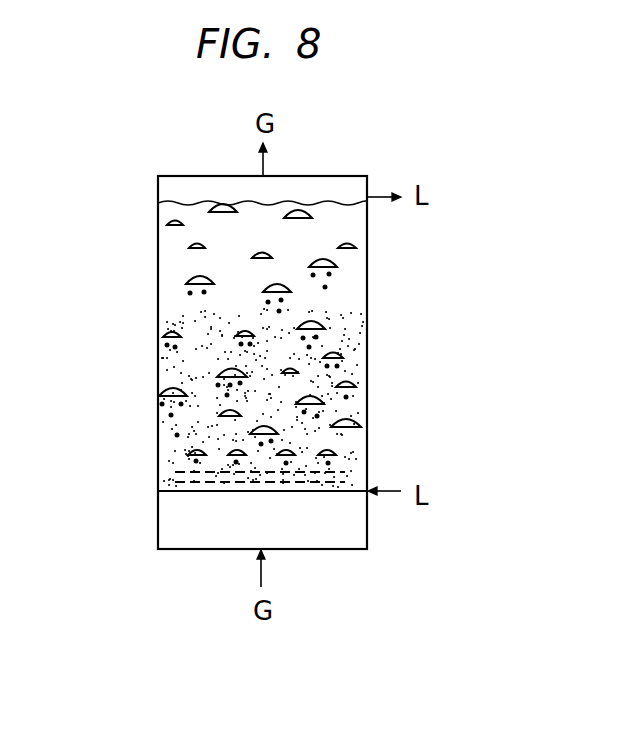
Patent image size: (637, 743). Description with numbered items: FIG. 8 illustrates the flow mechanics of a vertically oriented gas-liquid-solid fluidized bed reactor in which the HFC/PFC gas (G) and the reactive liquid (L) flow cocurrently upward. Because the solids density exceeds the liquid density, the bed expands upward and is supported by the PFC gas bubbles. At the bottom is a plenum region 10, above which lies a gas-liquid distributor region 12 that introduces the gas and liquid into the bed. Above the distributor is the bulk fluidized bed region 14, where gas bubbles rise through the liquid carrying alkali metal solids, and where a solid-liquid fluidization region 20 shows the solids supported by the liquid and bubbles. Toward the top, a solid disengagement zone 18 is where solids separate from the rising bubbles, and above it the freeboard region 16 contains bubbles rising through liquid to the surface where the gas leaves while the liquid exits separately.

The plenum region 10 is at (150, 548).
The gas-liquid distributor region 12 is at (150, 490).
The bulk fluidized bed region 14 is at (128, 307).
The freeboard region 16 is at (133, 176).
The solid disengagement zone 18 is at (378, 264).
The solid-liquid fluidization region 20 is at (343, 414).